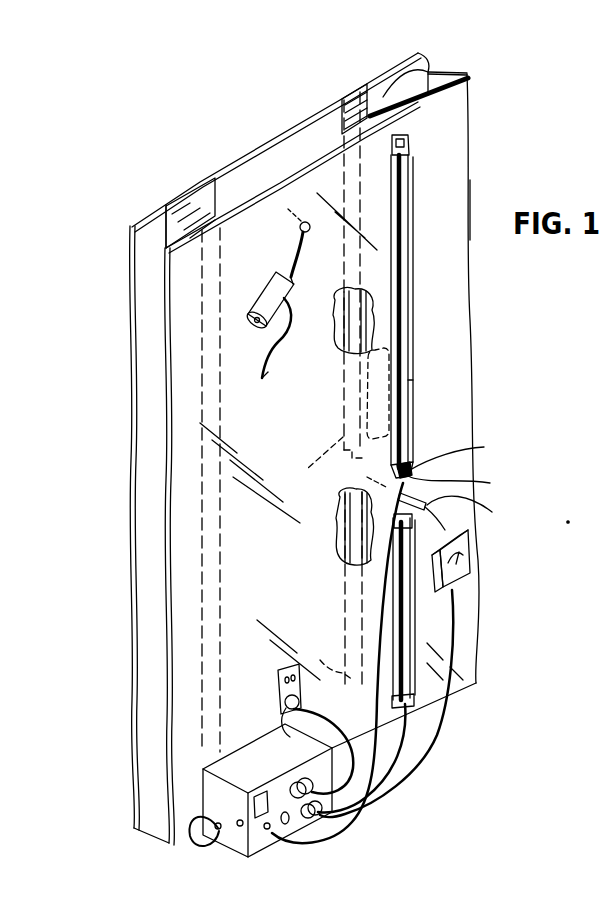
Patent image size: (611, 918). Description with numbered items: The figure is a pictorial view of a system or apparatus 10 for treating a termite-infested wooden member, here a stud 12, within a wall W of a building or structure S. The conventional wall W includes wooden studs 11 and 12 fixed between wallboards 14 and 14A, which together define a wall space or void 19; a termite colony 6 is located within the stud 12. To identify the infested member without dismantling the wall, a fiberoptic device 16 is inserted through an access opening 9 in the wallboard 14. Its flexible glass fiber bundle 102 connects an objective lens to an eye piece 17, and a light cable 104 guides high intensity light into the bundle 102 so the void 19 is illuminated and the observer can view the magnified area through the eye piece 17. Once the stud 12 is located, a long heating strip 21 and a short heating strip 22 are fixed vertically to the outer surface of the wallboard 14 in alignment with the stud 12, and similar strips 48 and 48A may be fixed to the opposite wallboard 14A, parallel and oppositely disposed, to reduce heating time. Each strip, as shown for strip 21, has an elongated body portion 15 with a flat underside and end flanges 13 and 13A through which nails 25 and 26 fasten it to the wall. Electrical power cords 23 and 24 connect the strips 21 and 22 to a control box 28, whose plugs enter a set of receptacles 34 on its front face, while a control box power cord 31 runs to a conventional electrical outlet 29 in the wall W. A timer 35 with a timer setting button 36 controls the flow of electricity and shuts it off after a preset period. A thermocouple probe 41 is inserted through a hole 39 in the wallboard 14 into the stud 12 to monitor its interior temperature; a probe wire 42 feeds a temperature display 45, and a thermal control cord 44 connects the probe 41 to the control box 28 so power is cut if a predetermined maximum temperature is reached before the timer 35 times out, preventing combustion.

The termite colony 6 is at (337, 402).
The access opening 9 is at (300, 230).
The system or apparatus 10 is at (452, 337).
The wooden stud 11 is at (224, 173).
The stud 12 is at (468, 76).
The end flange 13 is at (392, 150).
The end flange 13A is at (467, 452).
The wallboard 14 is at (454, 219).
The wallboard 14A is at (188, 200).
The elongated body portion 15 is at (414, 391).
The fiberoptic device 16 is at (283, 306).
The eye piece 17 is at (258, 343).
The wall space or void 19 is at (295, 146).
The heating strip 21 is at (412, 253).
The heating strip 22 is at (437, 630).
The electrical power cord 23 is at (360, 685).
The electrical power cord 24 is at (362, 663).
The nail 25 is at (409, 143).
The nail 26 is at (408, 470).
The control box 28 is at (233, 860).
The electrical outlet 29 is at (266, 678).
The control box power cord 31 is at (281, 731).
The electrical outlets or receptacles 34 is at (266, 834).
The timer 35 is at (268, 796).
The timer setting button 36 is at (240, 820).
The aperture or hole 39 is at (465, 489).
The thermocouple probe 41 is at (459, 514).
The probe wire 42 is at (447, 527).
The thermal control cord 44 is at (455, 712).
The temperature display 45 is at (470, 557).
The heating strip 48 is at (344, 325).
The heating strip 48A is at (337, 551).
The flexible glass fiber bundle 102 is at (277, 269).
The light cable 104 is at (268, 362).
The wall W is at (480, 124).
The building or structure S is at (494, 313).